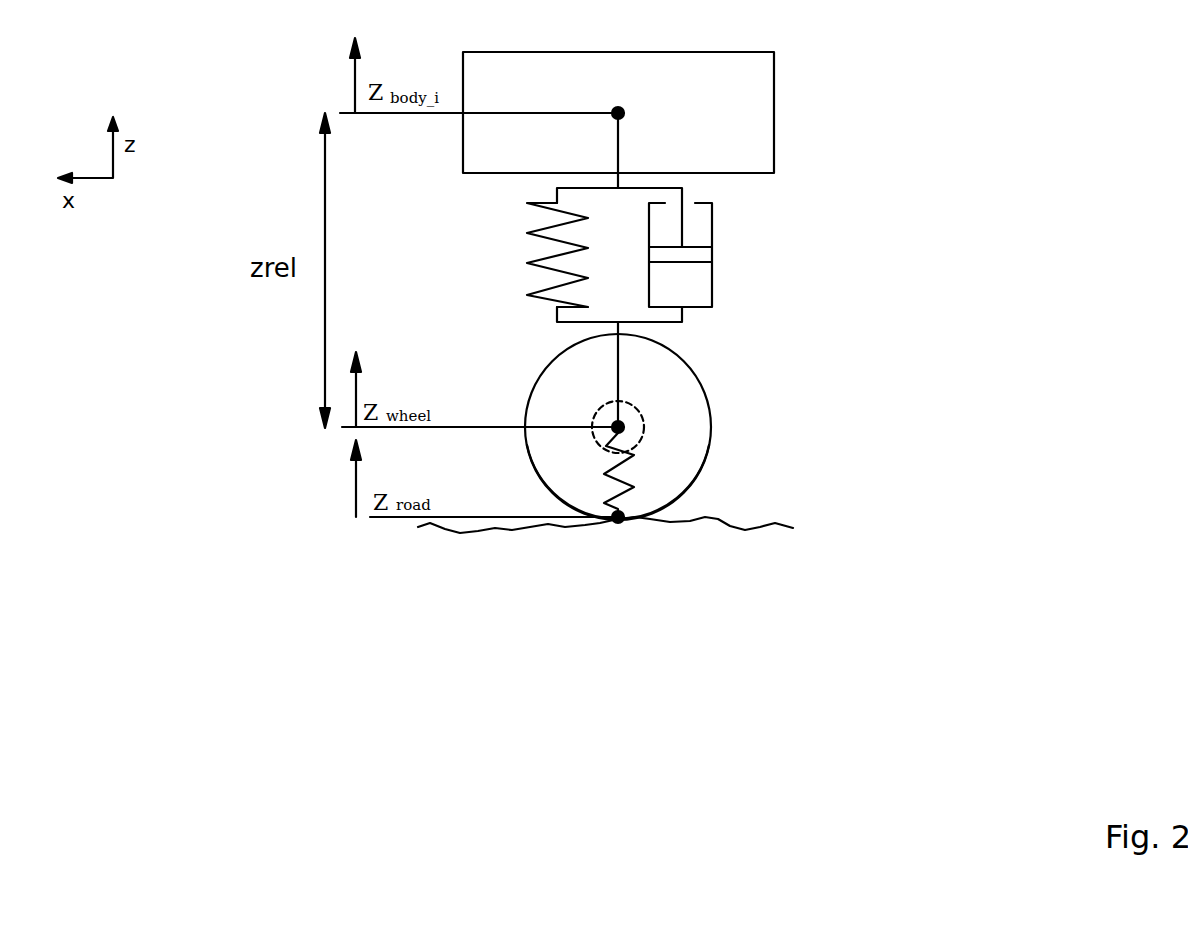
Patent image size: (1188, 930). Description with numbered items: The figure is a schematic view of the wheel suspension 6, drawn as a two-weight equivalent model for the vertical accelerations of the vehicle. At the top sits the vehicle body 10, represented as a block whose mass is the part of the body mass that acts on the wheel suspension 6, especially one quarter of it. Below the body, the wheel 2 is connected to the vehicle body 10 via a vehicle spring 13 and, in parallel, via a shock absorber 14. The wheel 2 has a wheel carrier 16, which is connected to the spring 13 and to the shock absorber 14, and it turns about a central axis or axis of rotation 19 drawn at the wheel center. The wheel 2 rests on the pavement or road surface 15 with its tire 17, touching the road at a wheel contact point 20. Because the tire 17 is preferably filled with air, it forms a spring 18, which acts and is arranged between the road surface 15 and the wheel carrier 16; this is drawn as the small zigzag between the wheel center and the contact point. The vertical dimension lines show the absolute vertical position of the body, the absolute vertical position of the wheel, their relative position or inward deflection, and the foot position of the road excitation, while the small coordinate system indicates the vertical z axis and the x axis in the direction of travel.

The vehicle body 10 is at (710, 52).
The wheel suspension 6 is at (880, 191).
The vehicle spring 13 is at (537, 283).
The shock absorber 14 is at (712, 282).
The wheel 2 is at (710, 367).
The wheel carrier 16 is at (640, 412).
The axis of rotation 19 is at (628, 428).
The spring 18 is at (604, 476).
The tire 17 is at (663, 475).
The wheel contact point 20 is at (618, 517).
The road surface 15 is at (772, 528).